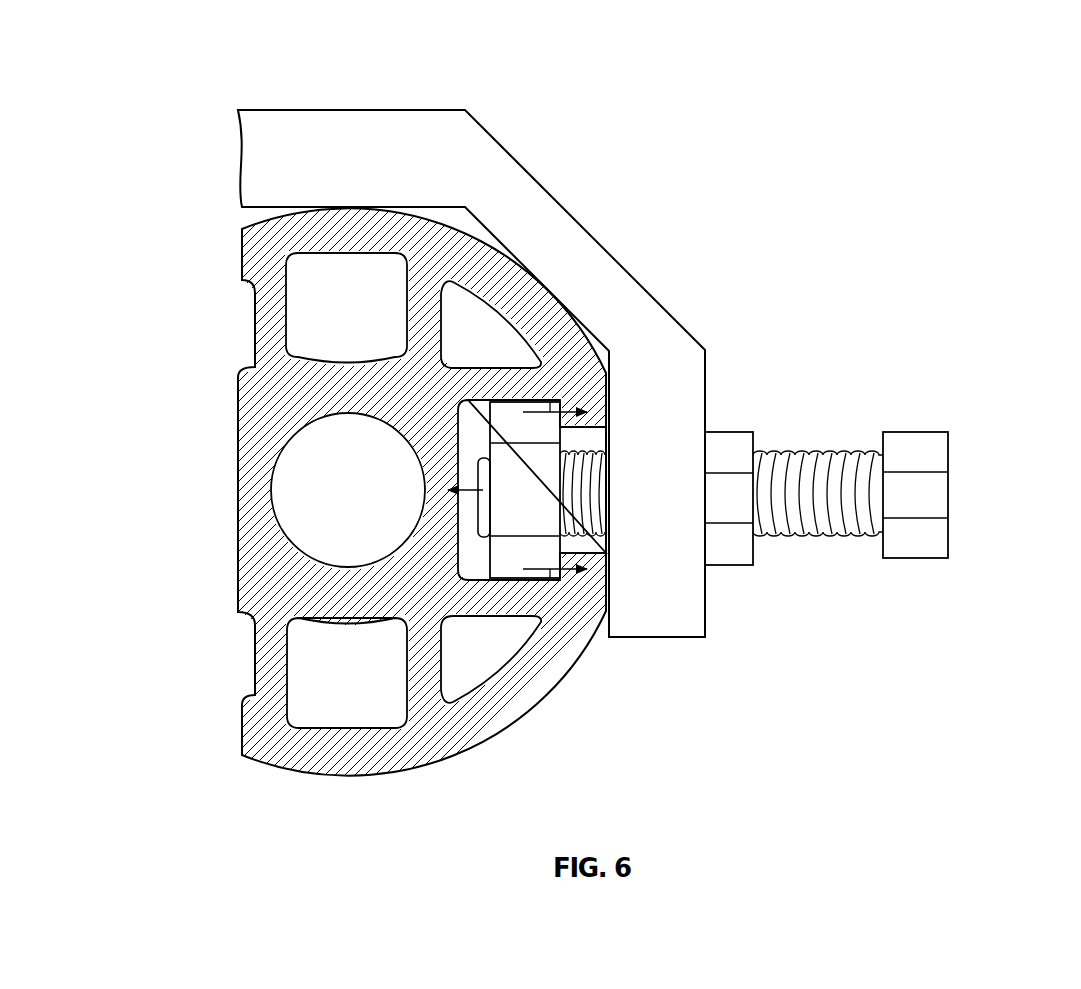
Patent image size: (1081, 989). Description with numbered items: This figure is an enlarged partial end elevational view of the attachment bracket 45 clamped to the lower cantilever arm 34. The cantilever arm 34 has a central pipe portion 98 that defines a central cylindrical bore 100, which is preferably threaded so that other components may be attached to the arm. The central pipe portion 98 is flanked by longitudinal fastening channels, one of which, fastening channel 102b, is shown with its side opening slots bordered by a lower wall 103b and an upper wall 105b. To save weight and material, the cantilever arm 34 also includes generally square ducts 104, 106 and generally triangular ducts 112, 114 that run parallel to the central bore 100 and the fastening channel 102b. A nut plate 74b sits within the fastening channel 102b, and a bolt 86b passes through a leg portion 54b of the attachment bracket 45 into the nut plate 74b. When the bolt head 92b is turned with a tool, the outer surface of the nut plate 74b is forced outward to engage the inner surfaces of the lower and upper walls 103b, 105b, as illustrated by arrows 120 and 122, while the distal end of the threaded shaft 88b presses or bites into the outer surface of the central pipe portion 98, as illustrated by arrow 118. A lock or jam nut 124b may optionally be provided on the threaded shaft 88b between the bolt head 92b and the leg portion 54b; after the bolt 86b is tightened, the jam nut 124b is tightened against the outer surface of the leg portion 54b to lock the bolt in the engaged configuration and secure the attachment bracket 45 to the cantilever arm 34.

The attachment bracket 45 is at (276, 80).
The lower cantilever arm 34 is at (480, 743).
The leg portion 54b is at (705, 362).
The nut plate 74b is at (507, 428).
The bolt 86b is at (1000, 429).
The threaded shaft 88b is at (830, 535).
The bolt head 92b is at (949, 495).
The central pipe portion 98 is at (342, 377).
The central cylindrical bore 100 is at (295, 486).
The fastening channel 102b is at (478, 417).
The lower wall 103b is at (592, 553).
The square duct 104 is at (328, 263).
The upper wall 105b is at (609, 383).
The square duct 106 is at (363, 708).
The triangular duct 112 is at (500, 643).
The triangular duct 114 is at (487, 313).
The arrow 118 is at (473, 493).
The arrow 120 is at (537, 360).
The arrow 122 is at (538, 572).
The lock or jam nut 124b is at (733, 432).